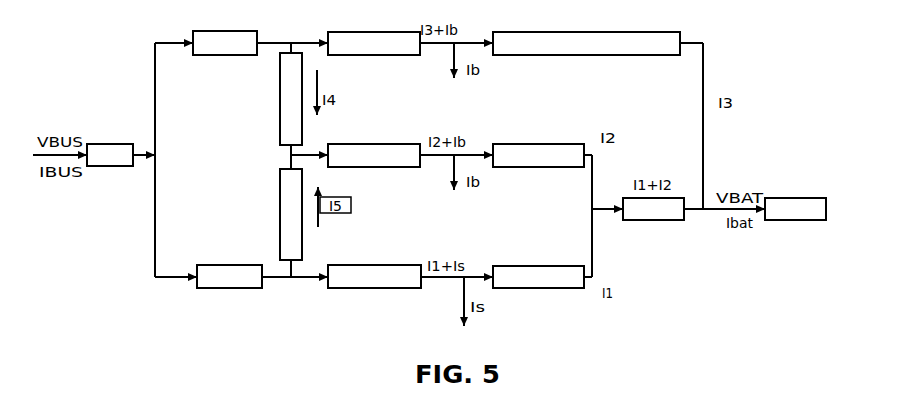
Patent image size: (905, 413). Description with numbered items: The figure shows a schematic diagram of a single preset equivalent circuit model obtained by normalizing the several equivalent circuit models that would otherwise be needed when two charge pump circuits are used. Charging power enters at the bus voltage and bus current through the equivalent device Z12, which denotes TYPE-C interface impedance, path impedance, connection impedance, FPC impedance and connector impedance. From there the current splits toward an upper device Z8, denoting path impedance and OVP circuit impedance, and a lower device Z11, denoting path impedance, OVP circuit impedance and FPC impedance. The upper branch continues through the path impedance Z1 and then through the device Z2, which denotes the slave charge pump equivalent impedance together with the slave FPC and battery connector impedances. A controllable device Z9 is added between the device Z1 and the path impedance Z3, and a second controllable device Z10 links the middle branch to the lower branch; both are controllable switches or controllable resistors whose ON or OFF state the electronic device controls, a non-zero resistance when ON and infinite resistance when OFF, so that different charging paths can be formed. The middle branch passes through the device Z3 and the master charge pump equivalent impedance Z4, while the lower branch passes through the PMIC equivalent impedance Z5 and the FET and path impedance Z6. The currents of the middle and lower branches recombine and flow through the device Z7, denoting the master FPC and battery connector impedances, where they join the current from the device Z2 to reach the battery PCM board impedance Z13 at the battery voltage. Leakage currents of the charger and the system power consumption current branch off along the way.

The path impedance Z1 is at (374, 43).
The slave charge pump equivalent impedance Z2 is at (586, 43).
The path impedance Z3 is at (374, 155).
The master charge pump equivalent impedance Z4 is at (538, 155).
The PMIC equivalent impedance Z5 is at (374, 276).
The FET impedance Z6 is at (538, 277).
The master FPC impedance Z7 is at (653, 209).
The path and OVP circuit impedance Z8 is at (225, 43).
The controllable device Z9 is at (291, 99).
The controllable device Z10 is at (291, 214).
The path, OVP circuit and FPC impedance Z11 is at (229, 276).
The TYPE-C interface impedance Z12 is at (110, 155).
The battery PCM board impedance Z13 is at (795, 209).